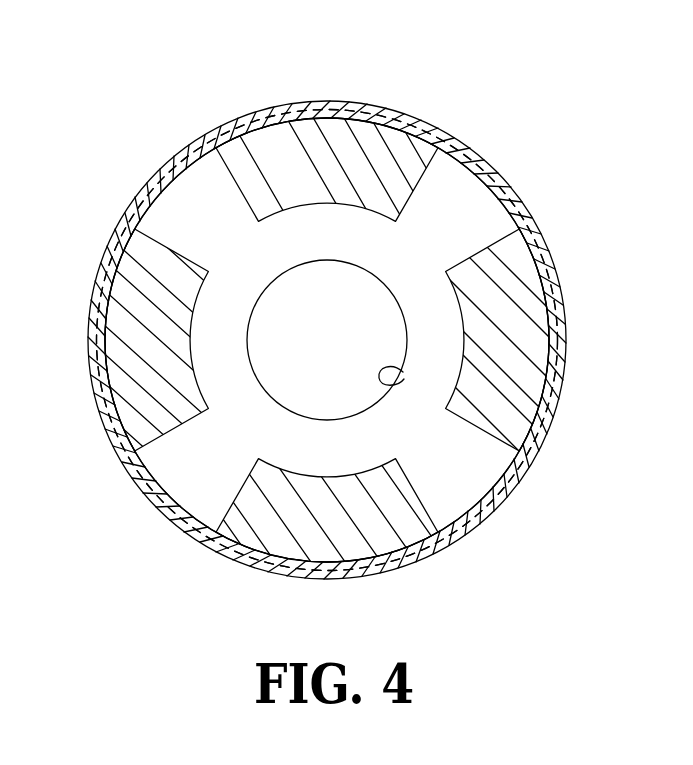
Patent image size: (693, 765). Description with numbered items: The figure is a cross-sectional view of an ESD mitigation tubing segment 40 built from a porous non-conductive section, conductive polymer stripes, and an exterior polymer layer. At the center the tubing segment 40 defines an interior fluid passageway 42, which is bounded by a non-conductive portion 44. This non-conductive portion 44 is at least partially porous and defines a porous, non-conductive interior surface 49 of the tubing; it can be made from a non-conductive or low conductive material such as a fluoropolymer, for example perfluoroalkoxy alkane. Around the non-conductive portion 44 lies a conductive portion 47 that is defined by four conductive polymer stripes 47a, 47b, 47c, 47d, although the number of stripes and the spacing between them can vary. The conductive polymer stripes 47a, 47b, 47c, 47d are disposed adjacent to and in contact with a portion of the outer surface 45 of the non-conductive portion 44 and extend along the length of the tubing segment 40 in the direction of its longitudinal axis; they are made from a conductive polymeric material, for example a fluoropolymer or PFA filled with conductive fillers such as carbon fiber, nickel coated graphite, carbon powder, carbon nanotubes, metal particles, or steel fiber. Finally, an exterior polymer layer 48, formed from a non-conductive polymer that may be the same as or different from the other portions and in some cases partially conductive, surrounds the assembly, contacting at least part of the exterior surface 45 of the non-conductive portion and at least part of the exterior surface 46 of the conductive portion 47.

The ESD mitigation tubing segment 40 is at (583, 131).
The interior fluid passageway 42 is at (378, 320).
The non-conductive portion 44 is at (258, 413).
The outer surface of the non-conductive portion 45 is at (296, 203).
The exterior surface of the conductive portion 46 is at (413, 137).
The conductive portion 47 is at (317, 322).
The conductive polymer stripe 47a is at (378, 160).
The conductive polymer stripe 47b is at (528, 285).
The conductive polymer stripe 47c is at (325, 535).
The conductive polymer stripe 47d is at (131, 308).
The exterior polymer layer 48 is at (95, 367).
The porous non-conductive interior surface 49 is at (403, 372).